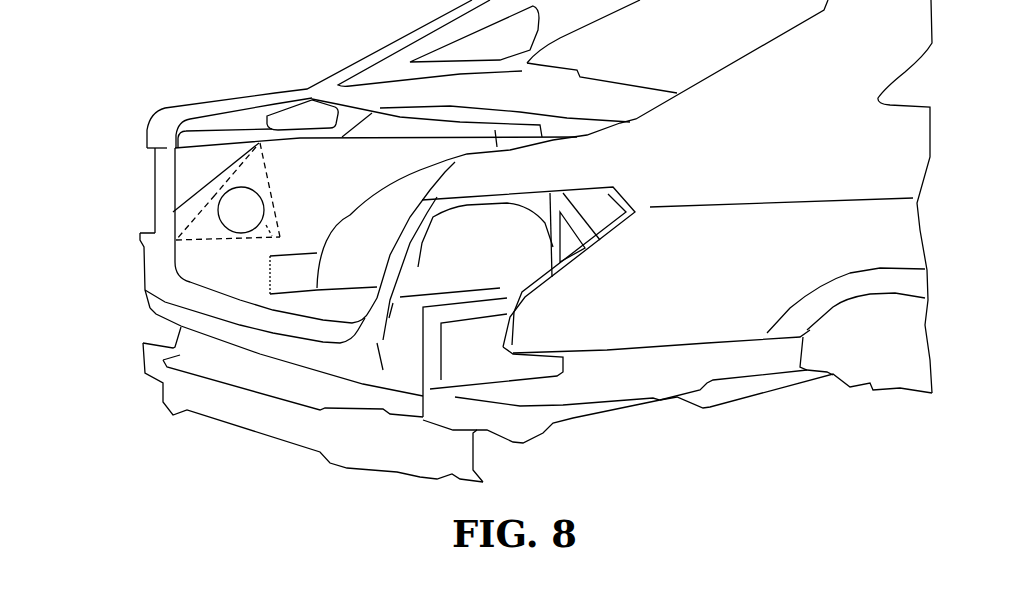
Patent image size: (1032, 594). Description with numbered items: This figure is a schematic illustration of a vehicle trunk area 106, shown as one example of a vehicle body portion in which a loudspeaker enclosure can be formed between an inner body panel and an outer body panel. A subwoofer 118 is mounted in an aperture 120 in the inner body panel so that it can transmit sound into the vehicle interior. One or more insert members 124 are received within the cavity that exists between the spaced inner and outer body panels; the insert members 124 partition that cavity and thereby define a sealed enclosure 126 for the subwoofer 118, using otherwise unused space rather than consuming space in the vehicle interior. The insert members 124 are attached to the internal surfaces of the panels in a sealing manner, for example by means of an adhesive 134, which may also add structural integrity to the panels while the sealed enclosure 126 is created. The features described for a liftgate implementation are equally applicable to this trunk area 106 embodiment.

The trunk area 106 is at (199, 89).
The subwoofer 118 is at (240, 202).
The insert member 124 is at (195, 198).
The sealed enclosure 126 is at (196, 226).
The aperture 120 is at (214, 229).
The adhesive 134 is at (261, 143).